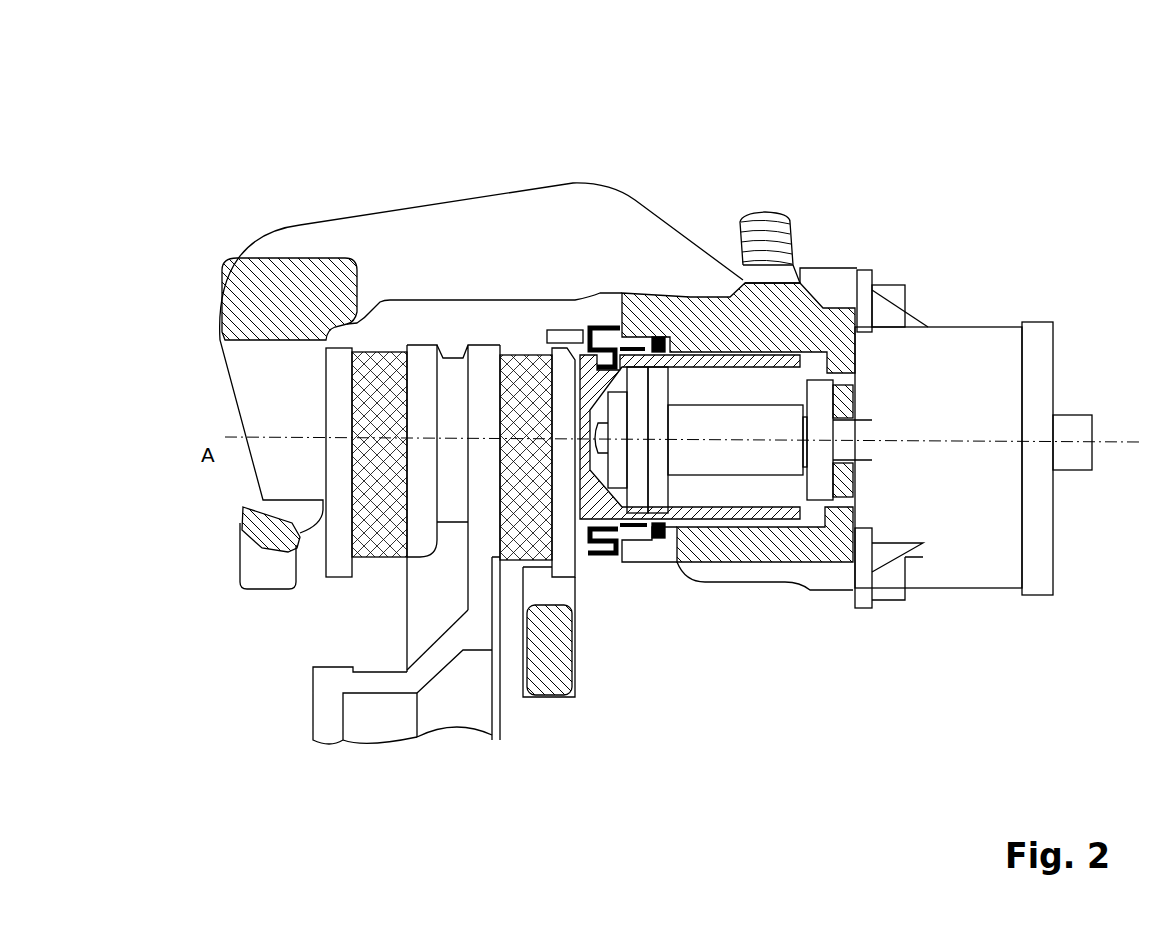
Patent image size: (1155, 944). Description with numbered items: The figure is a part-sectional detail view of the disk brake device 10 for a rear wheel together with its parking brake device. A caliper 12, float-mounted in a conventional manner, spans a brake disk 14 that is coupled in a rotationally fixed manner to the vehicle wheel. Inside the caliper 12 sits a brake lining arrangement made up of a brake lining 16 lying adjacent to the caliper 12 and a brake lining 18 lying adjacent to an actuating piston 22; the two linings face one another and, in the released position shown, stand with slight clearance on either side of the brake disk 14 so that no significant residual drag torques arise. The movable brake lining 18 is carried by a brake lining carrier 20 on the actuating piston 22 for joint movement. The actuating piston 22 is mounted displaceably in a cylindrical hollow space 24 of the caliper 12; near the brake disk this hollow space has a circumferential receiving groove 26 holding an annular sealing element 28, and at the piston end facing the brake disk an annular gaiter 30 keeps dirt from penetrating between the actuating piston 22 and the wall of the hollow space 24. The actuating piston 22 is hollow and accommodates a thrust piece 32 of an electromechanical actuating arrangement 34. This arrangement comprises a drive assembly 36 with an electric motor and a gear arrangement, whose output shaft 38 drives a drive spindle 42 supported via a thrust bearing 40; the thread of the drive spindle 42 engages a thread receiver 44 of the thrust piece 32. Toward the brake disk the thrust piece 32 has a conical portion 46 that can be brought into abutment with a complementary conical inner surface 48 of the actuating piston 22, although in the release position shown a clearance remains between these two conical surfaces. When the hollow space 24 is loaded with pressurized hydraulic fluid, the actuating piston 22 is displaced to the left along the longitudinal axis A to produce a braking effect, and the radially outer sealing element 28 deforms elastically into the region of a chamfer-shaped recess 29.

The disk brake device 10 is at (932, 190).
The caliper 12 is at (403, 223).
The brake disk 14 is at (400, 597).
The brake lining 16 is at (353, 360).
The brake lining 18 is at (517, 363).
The brake lining carrier 20 is at (570, 377).
The actuating piston 22 is at (708, 347).
The cylindrical hollow space 24 is at (820, 358).
The receiving groove 26 is at (668, 527).
The sealing element 28 is at (658, 540).
The chamfer-shaped recess 29 is at (653, 335).
The annular gaiter 30 is at (603, 560).
The thrust piece 32 is at (779, 402).
The electromechanical actuating arrangement 34 is at (1013, 324).
The drive assembly 36 is at (988, 550).
The output shaft 38 is at (857, 432).
The thrust bearing 40 is at (847, 385).
The drive spindle 42 is at (857, 474).
The thread receiver 44 is at (745, 427).
The conical portion 46 is at (619, 324).
The inner surface 48 is at (600, 325).